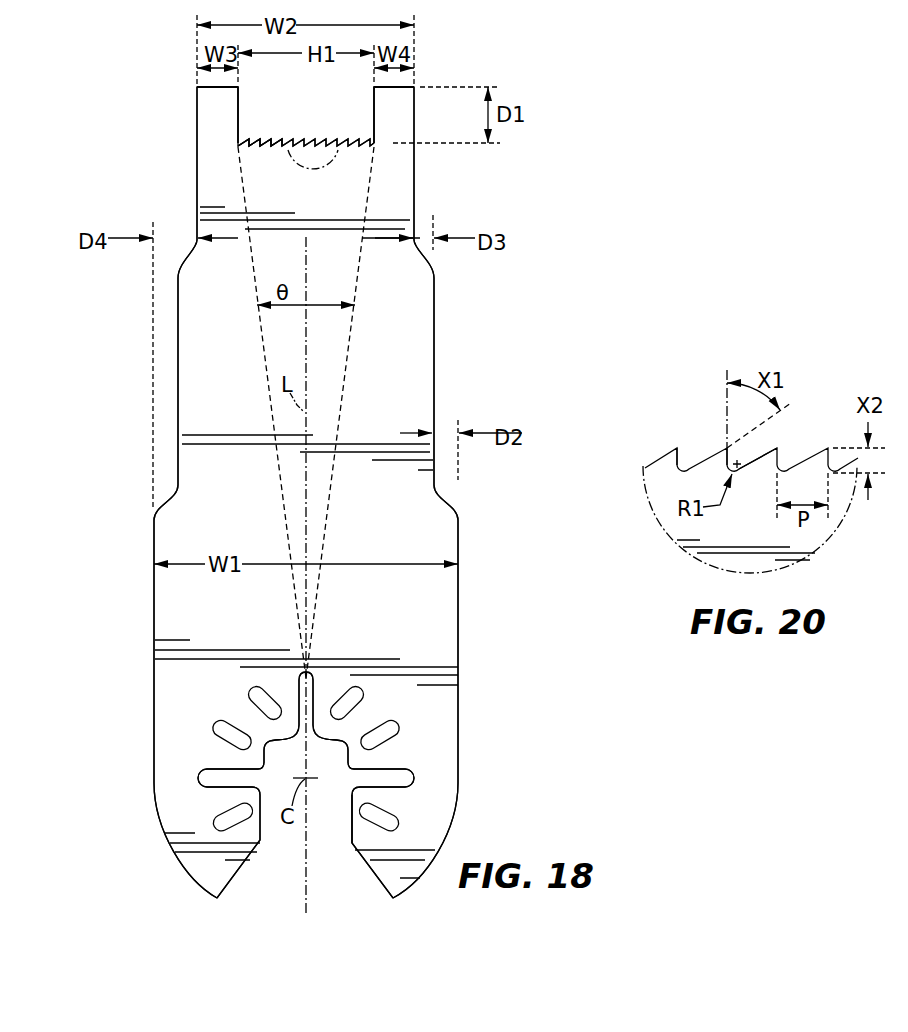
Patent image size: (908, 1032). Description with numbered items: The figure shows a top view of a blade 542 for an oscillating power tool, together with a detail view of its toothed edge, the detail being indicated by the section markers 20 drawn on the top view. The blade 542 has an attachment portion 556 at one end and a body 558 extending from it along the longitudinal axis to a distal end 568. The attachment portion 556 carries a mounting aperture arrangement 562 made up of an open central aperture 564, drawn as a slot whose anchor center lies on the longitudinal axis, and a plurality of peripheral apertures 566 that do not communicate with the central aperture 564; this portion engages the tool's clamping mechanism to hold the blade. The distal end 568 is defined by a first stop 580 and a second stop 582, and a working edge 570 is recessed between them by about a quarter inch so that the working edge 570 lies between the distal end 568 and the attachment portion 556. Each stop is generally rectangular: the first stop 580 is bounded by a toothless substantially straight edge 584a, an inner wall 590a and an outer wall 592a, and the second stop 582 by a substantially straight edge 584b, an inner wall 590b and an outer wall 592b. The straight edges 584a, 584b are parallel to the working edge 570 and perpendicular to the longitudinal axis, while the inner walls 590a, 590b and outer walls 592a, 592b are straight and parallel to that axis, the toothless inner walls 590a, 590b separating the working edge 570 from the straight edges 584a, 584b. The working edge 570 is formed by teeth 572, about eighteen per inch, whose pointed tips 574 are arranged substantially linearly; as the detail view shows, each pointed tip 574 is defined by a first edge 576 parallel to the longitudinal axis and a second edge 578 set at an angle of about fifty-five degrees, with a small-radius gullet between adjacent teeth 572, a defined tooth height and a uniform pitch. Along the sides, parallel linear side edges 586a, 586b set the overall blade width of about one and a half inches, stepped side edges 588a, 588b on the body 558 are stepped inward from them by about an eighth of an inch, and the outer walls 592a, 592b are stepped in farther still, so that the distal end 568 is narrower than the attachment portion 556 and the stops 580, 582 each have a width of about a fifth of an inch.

In FIG. 18, the blade 542 is at (522, 74).
In FIG. 18, the attachment portion 556 is at (185, 790).
In FIG. 18, the body 558 is at (378, 283).
In FIG. 18, the mounting aperture arrangement 562 is at (407, 745).
In FIG. 18, the central aperture 564 is at (352, 802).
In FIG. 18, the peripheral apertures 566 is at (226, 722).
In FIG. 18, the distal end 568 is at (194, 86).
In FIG. 18, the working edge 570 is at (375, 128).
In FIG. 18, the teeth 572 is at (277, 147).
In FIG. 20, the teeth 572 is at (670, 463).
In FIG. 20, the pointed tip 574 is at (688, 447).
In FIG. 20, the first edge 576 is at (740, 462).
In FIG. 20, the second edge 578 is at (724, 448).
In FIG. 18, the first stop 580 is at (215, 112).
In FIG. 18, the second stop 582 is at (393, 114).
In FIG. 18, the substantially straight edge 584a is at (210, 85).
In FIG. 18, the substantially straight edge 584b is at (405, 85).
In FIG. 18, the linear side edge 586a is at (154, 590).
In FIG. 18, the linear side edge 586b is at (458, 590).
In FIG. 18, the stepped side edge 588a is at (175, 380).
In FIG. 18, the stepped side edge 588b is at (440, 377).
In FIG. 18, the inner wall 590a is at (240, 118).
In FIG. 18, the inner wall 590b is at (372, 118).
In FIG. 18, the outer wall 592a is at (197, 170).
In FIG. 18, the outer wall 592b is at (414, 183).
In FIG. 18, the section line 20 is at (294, 138).